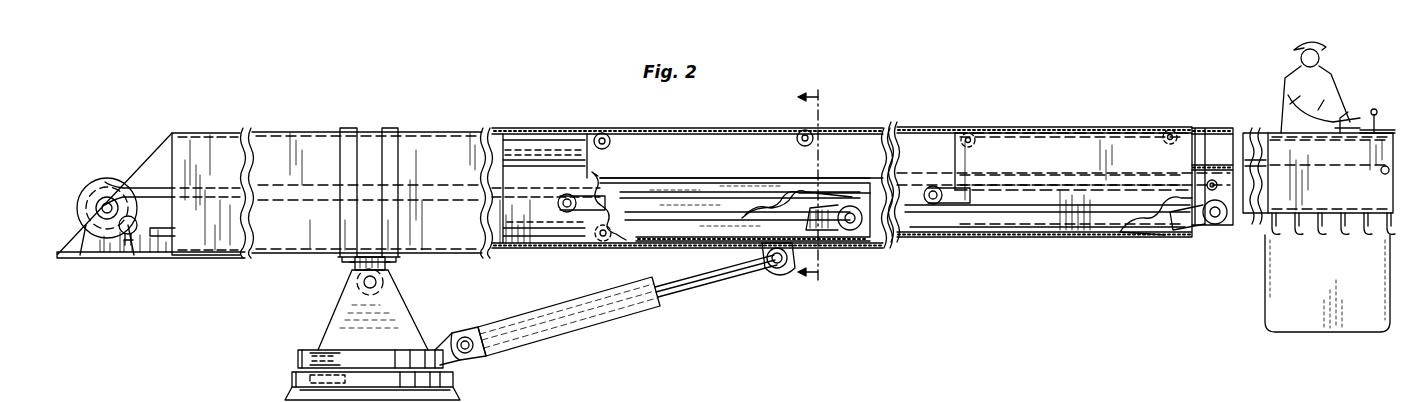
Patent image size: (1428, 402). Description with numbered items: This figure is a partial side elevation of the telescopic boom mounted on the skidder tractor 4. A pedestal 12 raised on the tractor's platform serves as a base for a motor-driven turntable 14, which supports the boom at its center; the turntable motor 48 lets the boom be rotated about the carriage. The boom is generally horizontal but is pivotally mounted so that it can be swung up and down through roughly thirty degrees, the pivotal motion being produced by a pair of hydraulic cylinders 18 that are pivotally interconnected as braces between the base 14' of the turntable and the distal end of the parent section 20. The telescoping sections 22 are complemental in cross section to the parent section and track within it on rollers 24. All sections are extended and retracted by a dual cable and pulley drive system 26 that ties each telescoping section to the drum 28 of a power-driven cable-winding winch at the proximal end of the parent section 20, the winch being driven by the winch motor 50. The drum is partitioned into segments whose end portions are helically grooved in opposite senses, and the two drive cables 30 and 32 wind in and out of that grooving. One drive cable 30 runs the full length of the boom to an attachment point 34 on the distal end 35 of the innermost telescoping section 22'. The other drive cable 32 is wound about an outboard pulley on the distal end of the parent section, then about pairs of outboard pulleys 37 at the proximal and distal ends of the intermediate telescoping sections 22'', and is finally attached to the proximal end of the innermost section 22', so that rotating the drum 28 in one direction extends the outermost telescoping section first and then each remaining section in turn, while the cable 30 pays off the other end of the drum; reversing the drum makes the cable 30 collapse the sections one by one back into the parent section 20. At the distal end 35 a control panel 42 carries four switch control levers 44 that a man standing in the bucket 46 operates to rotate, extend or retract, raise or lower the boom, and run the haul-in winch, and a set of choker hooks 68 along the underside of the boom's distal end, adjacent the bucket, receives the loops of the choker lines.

The tractor 4 is at (819, 185).
The pedestal 12 is at (292, 392).
The turntable 14 is at (344, 303).
The base of the turntable 14' is at (335, 351).
The hydraulic cylinders 18 is at (597, 318).
The parent section 20 is at (542, 128).
The telescoping sections 22 is at (1030, 232).
The innermost telescoping section 22' is at (1244, 200).
The intermediate telescoping sections 22'' is at (1096, 131).
The rollers 24 is at (602, 132).
The dual cable and pulley drive system 26 is at (685, 150).
The drum 28 is at (109, 168).
The drive cable 30 is at (758, 178).
The drive cable 32 is at (153, 233).
The attachment point 34 is at (1385, 172).
The distal end of the boom 35 is at (1397, 118).
The outboard pulleys 37 is at (567, 194).
The control panel 42 is at (1345, 110).
The switch control levers 44 is at (1373, 108).
The bucket 46 is at (1365, 318).
The turntable motor 48 is at (300, 379).
The winch motor 50 is at (122, 235).
The choker hooks 68 is at (1300, 240).